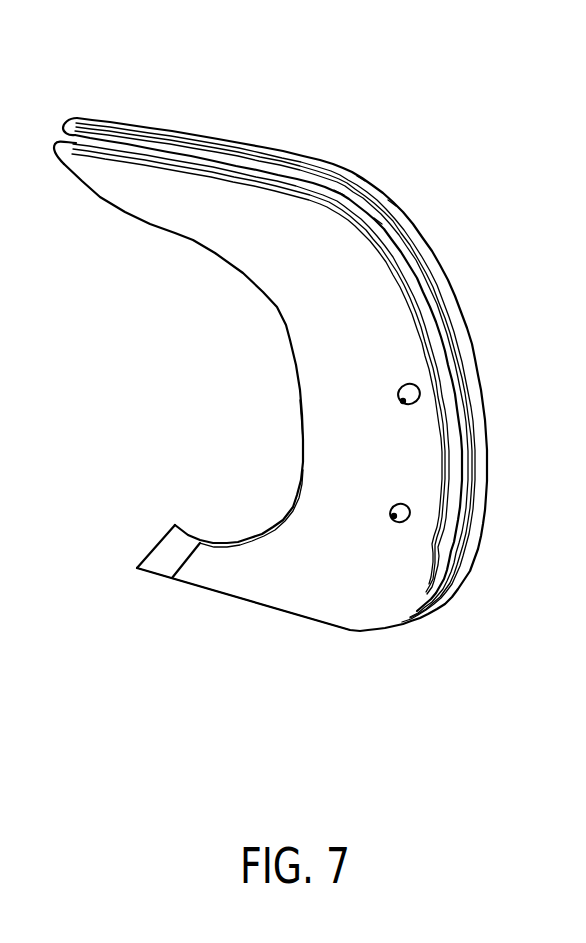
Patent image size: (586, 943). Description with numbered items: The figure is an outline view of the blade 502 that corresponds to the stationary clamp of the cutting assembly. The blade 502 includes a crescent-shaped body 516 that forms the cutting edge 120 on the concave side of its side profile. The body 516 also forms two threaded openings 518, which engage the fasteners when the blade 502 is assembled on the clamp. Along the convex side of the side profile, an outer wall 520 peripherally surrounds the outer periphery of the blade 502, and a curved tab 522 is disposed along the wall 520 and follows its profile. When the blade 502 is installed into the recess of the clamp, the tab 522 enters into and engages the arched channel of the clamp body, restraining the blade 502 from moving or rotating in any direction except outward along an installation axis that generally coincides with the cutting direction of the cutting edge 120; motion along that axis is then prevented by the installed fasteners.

The blade 502 is at (252, 198).
The outer wall 520 is at (384, 225).
The curved tab 522 is at (442, 271).
The cutting edge 120 is at (302, 437).
The threaded openings 518 is at (403, 402).
The crescent-shaped body 516 is at (307, 603).